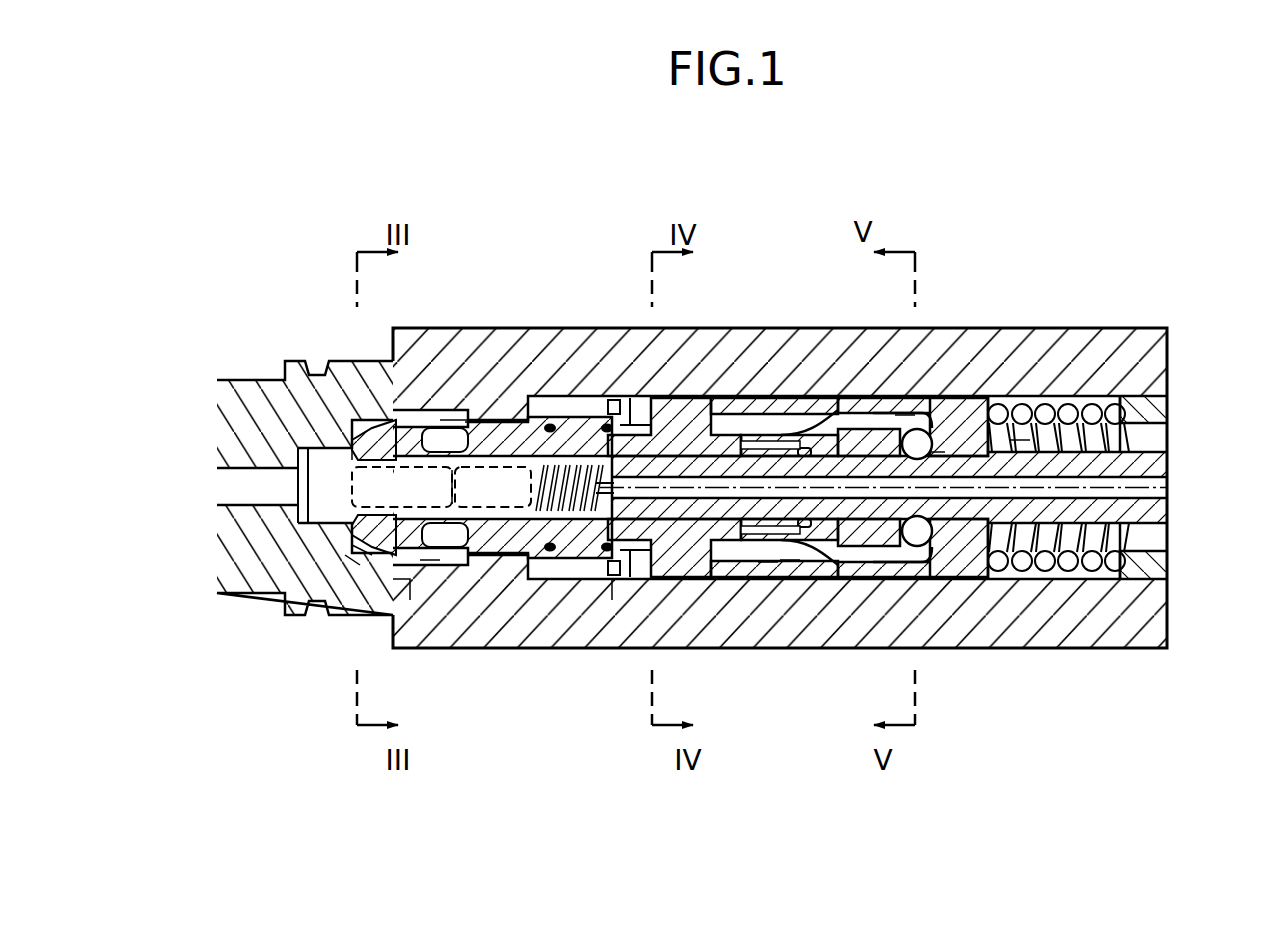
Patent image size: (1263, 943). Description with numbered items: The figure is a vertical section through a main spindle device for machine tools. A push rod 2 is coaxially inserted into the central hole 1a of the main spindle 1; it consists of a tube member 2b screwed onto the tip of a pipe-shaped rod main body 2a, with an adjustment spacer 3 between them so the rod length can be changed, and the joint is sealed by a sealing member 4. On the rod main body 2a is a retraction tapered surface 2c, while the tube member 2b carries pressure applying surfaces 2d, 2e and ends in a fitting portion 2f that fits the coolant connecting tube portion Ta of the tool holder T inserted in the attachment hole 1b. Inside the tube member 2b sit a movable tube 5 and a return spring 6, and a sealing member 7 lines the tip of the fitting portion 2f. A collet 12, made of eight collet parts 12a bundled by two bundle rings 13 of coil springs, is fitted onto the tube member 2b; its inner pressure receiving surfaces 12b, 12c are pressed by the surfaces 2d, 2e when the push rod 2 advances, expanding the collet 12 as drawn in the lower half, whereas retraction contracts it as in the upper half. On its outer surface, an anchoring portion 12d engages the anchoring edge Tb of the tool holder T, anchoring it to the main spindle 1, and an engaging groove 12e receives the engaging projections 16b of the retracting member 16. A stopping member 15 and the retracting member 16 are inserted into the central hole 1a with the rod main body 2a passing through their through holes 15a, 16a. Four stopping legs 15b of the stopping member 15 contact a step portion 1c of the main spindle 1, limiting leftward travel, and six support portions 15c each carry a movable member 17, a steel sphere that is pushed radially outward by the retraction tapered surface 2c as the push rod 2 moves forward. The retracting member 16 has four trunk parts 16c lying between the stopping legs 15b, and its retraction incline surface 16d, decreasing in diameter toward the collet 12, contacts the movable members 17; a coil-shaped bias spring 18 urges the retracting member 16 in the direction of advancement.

The main spindle 1 is at (1083, 362).
The central hole 1a is at (1135, 410).
The attachment hole 1b is at (398, 582).
The step portion 1c is at (611, 585).
The push rod 2 is at (1167, 452).
The rod main body 2a is at (1167, 524).
The tube member 2b is at (636, 402).
The retraction tapered surface 2c is at (935, 453).
The pressure applying surface 2d is at (345, 562).
The pressure applying surface 2e is at (700, 521).
The fitting portion 2f is at (440, 484).
The adjustment spacer 3 is at (690, 410).
The sealing member 4 is at (803, 447).
The movable tube 5 is at (487, 496).
The return spring 6 is at (562, 512).
The sealing member 7 is at (428, 438).
The collet 12 is at (520, 430).
The collet part 12a is at (372, 556).
The pressure receiving surface 12b is at (432, 562).
The pressure receiving surface 12c is at (790, 562).
The anchoring portion 12d is at (474, 420).
The engaging groove 12e is at (684, 582).
The bundle ring 13 is at (606, 424).
The stopping member 15 is at (840, 556).
The through hole 15a is at (862, 560).
The stopping leg 15b is at (768, 562).
The support portion 15c is at (870, 428).
The retracting member 16 is at (960, 432).
The through hole 16a is at (1020, 440).
The engaging projection 16b is at (736, 414).
The trunk part 16c is at (766, 420).
The retraction incline surface 16d is at (905, 418).
The movable member 17 is at (925, 546).
The bias spring 18 is at (1026, 566).
The tool holder T is at (247, 380).
The coolant connecting tube portion Ta is at (350, 450).
The anchoring edge Tb is at (446, 446).